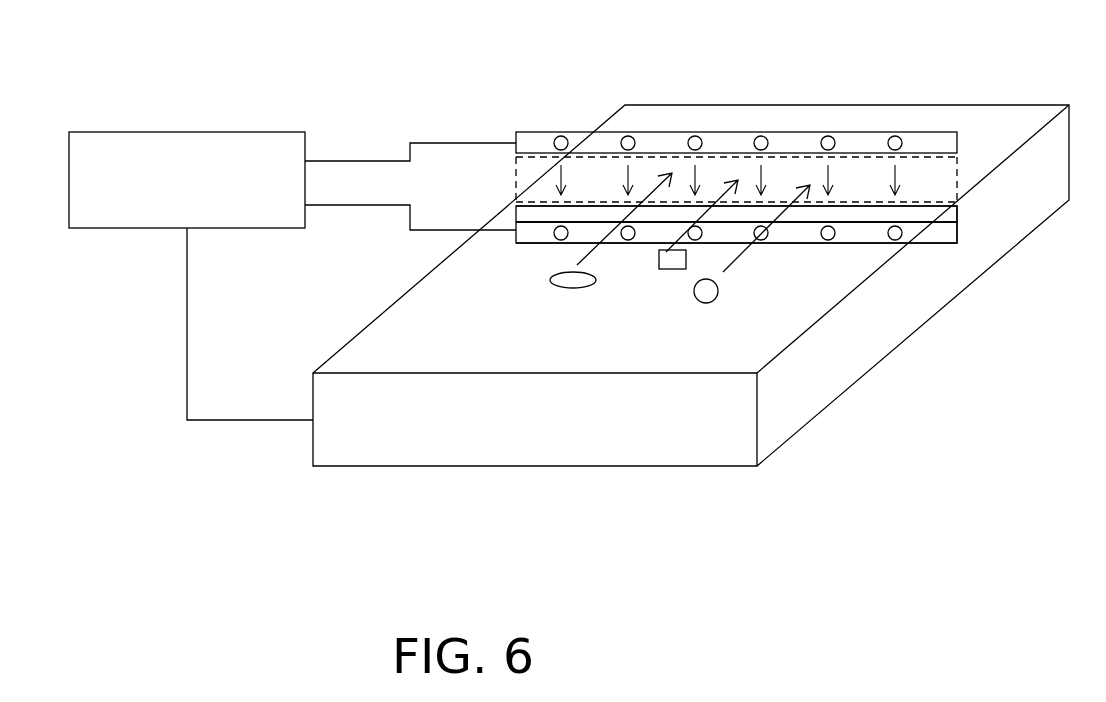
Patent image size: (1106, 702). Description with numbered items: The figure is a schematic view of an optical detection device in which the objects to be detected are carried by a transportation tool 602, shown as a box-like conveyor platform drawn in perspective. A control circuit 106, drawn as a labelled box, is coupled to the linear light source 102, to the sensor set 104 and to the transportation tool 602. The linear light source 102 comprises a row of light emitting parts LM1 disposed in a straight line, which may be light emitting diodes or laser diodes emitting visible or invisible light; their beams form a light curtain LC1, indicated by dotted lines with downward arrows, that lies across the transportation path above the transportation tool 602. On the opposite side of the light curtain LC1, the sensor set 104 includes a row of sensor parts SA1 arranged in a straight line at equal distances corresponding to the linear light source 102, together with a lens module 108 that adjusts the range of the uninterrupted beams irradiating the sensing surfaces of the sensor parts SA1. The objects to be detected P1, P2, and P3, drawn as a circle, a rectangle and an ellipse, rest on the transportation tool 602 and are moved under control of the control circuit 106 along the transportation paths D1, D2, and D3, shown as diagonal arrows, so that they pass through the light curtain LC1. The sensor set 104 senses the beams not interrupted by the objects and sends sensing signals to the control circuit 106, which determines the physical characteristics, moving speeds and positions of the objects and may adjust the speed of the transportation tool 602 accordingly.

The control circuit 106 is at (177, 131).
The linear light source 102 is at (537, 132).
The light emitting parts LM1 is at (895, 135).
The light curtain LC1 is at (957, 170).
The lens module 108 is at (957, 214).
The sensor set 104 is at (957, 230).
The sensor parts SA1 is at (898, 240).
The transportation tool 602 is at (873, 370).
The object to be detected P1 is at (718, 292).
The object to be detected P2 is at (673, 269).
The object to be detected P3 is at (573, 288).
The transportation path D1 is at (766, 233).
The transportation path D2 is at (702, 229).
The transportation path D3 is at (624, 226).